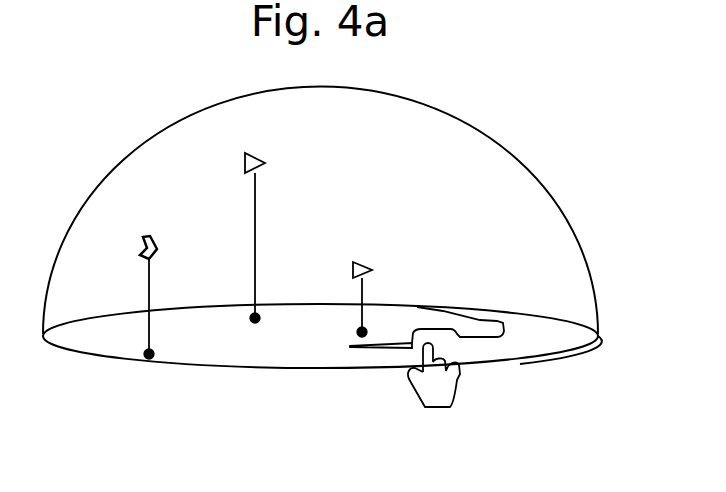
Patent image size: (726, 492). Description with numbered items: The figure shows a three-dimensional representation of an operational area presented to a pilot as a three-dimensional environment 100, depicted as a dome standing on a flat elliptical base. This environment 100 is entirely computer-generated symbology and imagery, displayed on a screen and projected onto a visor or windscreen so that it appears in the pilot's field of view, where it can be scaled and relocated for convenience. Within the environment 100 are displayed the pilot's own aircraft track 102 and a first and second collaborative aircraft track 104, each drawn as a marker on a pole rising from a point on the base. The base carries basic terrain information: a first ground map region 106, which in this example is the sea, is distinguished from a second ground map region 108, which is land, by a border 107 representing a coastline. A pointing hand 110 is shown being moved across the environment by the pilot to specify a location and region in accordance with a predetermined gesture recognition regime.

The 3D environment 100 is at (573, 148).
The own aircraft track 102 is at (141, 240).
The collaborative aircraft track 104 is at (245, 155).
The first ground map region 106 is at (233, 354).
The border 107 is at (355, 348).
The second ground map region 108 is at (545, 341).
The pointing hand 110 is at (458, 388).